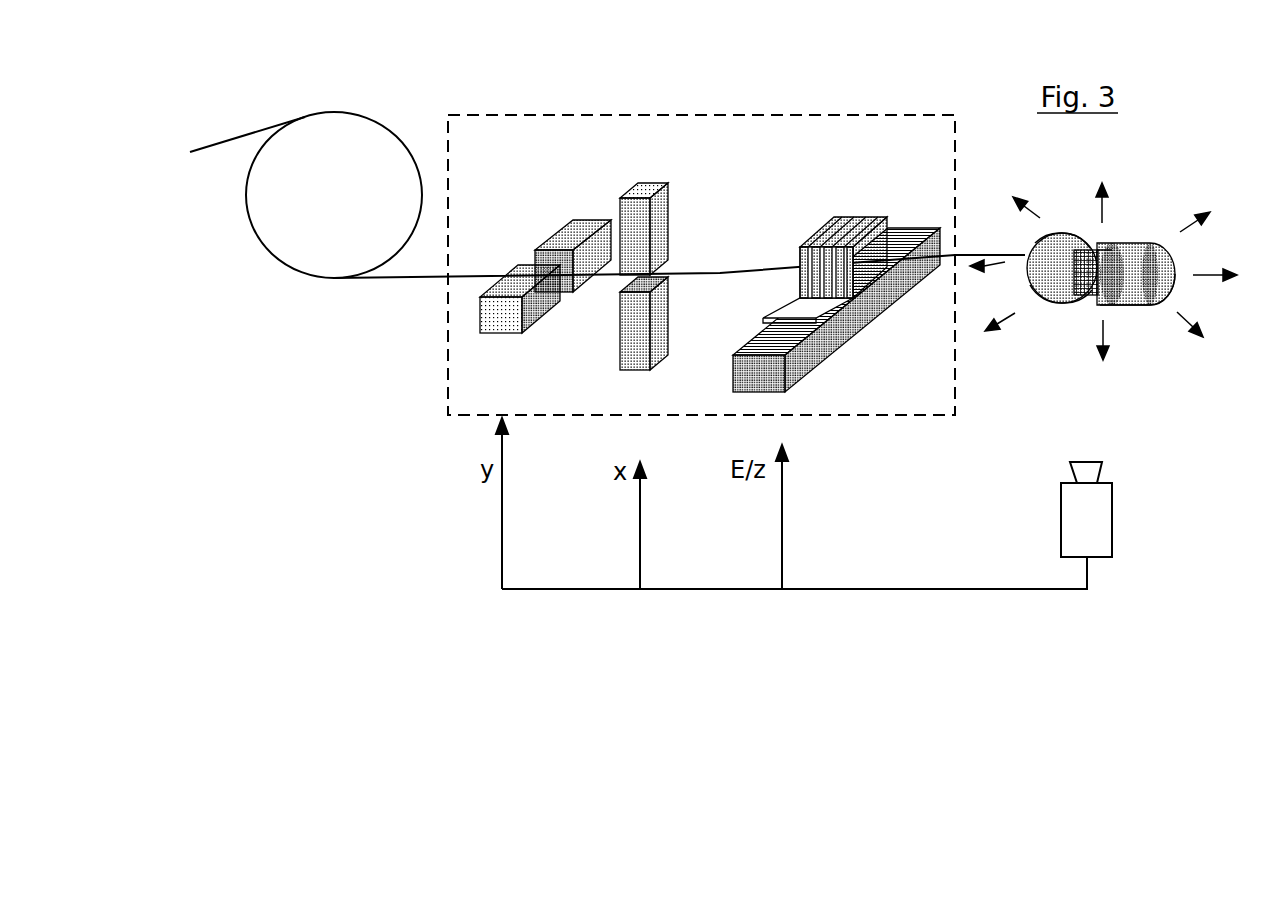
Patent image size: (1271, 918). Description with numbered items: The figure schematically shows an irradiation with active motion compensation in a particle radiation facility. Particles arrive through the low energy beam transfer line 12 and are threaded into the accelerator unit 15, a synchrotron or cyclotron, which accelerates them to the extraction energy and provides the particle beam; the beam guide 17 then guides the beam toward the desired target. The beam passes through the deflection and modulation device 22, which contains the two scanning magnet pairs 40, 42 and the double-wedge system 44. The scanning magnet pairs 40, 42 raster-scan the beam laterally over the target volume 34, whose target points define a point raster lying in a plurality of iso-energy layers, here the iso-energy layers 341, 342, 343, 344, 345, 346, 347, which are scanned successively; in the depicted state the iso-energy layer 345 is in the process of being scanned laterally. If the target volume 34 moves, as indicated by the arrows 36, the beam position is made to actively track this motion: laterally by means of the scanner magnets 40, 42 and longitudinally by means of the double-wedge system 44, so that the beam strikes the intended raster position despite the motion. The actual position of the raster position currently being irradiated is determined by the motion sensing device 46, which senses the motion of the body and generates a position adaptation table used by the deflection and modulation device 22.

The low energy beam transfer line 12 is at (210, 152).
The accelerator unit 15 is at (385, 123).
The beam guide 17 is at (405, 280).
The deflection and modulation device 22 is at (556, 116).
The target volume 34 is at (1119, 276).
The arrows 36 is at (1233, 270).
The scanning magnet pair 40 is at (670, 207).
The scanning magnet pair 42 is at (580, 225).
The double-wedge system 44 is at (890, 227).
The motion sensing device 46 is at (1112, 527).
The iso-energy layer 341 is at (1153, 307).
The iso-energy layer 342 is at (1133, 310).
The iso-energy layer 343 is at (1113, 250).
The iso-energy layer 344 is at (1083, 303).
The iso-energy layer 345 is at (1083, 237).
The iso-energy layer 346 is at (1043, 300).
The iso-energy layer 347 is at (1038, 237).